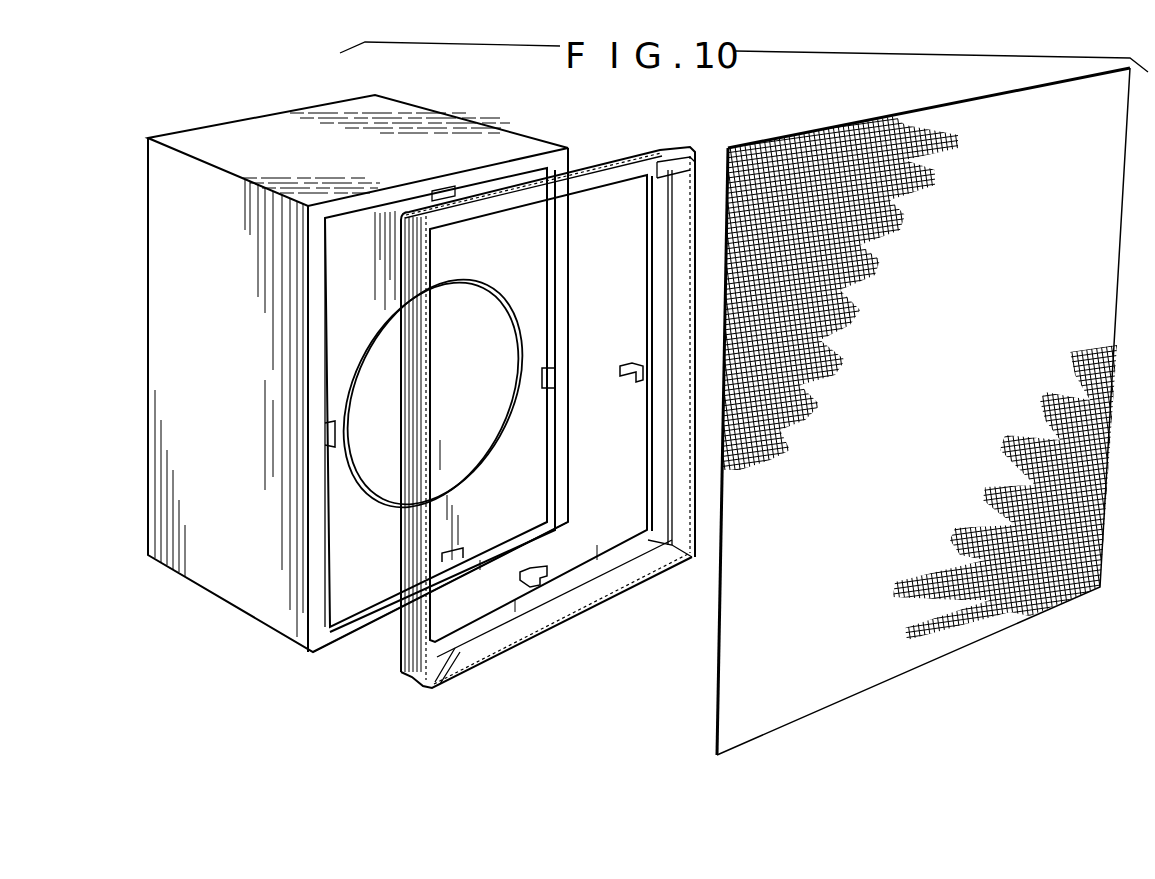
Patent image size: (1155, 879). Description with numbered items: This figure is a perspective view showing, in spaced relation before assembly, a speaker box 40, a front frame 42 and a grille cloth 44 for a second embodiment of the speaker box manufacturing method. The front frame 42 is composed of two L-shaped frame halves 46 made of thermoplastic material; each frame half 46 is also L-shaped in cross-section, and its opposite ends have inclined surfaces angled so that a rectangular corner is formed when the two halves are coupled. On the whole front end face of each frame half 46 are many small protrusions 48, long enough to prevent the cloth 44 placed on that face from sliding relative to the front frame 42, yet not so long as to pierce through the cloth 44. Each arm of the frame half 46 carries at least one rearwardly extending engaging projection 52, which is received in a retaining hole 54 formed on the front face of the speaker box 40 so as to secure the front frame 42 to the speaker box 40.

The speaker box 40 is at (515, 133).
The front frame 42 is at (515, 398).
The grille cloth 44 is at (910, 130).
The L-shaped frame half 46 is at (415, 625).
The small protrusions 48 is at (650, 178).
The engaging projection 52 is at (627, 382).
The retaining hole 54 is at (550, 378).